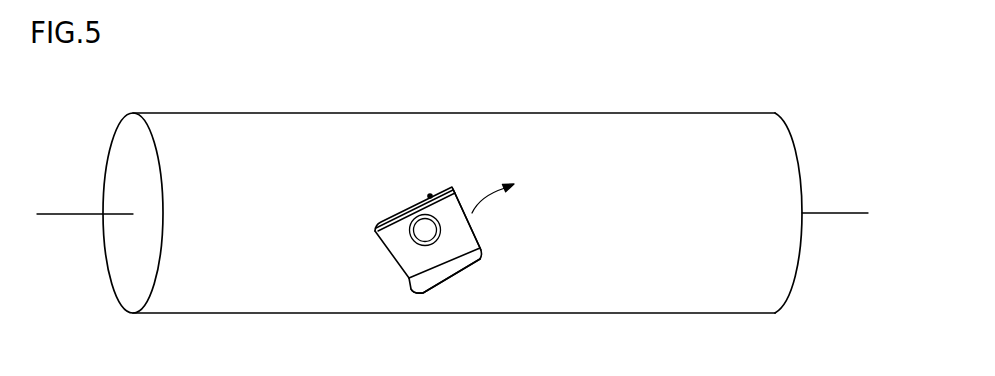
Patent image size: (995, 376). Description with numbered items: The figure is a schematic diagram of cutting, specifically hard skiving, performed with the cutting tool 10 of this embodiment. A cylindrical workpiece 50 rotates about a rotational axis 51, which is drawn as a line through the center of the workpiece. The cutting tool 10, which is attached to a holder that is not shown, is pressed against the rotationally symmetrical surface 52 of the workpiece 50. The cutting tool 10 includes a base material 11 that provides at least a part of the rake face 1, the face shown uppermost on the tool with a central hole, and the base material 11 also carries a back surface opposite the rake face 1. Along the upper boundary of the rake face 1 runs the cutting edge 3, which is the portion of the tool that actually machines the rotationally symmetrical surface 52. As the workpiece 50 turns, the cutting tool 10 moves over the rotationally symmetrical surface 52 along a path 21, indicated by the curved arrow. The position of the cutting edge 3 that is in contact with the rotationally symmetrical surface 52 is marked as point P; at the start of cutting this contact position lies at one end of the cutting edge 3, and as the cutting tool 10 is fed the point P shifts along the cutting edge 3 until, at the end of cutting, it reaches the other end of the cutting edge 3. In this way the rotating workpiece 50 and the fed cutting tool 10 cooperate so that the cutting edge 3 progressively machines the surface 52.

The rake face 1 is at (402, 247).
The cutting edge 3 is at (382, 214).
The point P is at (430, 193).
The cutting tool 10 is at (465, 267).
The base material 11 is at (461, 207).
The path 21 is at (497, 194).
The workpiece 50 is at (365, 300).
The rotational axis 51 is at (72, 216).
The rotationally symmetrical surface 52 is at (260, 257).